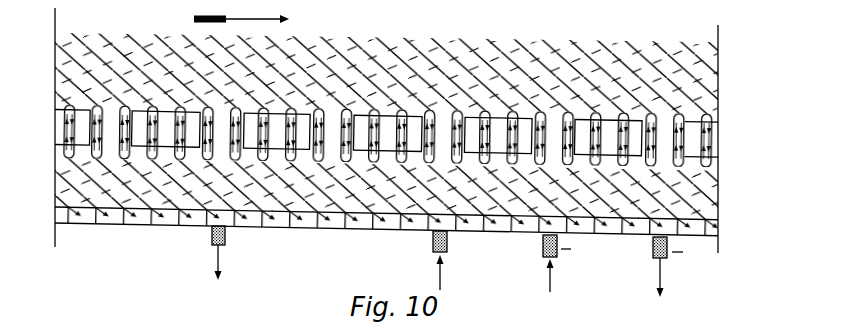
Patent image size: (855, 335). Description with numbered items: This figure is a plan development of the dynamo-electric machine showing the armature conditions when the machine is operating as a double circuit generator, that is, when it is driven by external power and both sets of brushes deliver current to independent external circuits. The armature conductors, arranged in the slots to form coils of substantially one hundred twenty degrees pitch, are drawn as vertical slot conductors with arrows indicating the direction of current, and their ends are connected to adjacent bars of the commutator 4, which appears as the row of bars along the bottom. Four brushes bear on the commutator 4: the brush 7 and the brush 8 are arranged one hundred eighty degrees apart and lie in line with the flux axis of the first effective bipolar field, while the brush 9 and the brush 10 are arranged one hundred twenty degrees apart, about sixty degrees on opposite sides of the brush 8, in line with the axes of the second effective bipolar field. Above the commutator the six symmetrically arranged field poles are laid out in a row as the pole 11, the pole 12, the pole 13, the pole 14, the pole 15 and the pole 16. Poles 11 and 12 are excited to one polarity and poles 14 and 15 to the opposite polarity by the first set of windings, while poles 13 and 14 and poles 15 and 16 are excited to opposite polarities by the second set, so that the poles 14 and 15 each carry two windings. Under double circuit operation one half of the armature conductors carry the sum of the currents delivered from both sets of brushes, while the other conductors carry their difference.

The commutator 4 is at (337, 226).
The brush 7 is at (212, 238).
The brush 8 is at (543, 247).
The brush 9 is at (433, 243).
The brush 10 is at (653, 245).
The field pole 11 is at (165, 129).
The field pole 12 is at (276, 131).
The field pole 13 is at (387, 133).
The field pole 14 is at (498, 135).
The field pole 15 is at (608, 137).
The field pole 16 is at (390, 133).